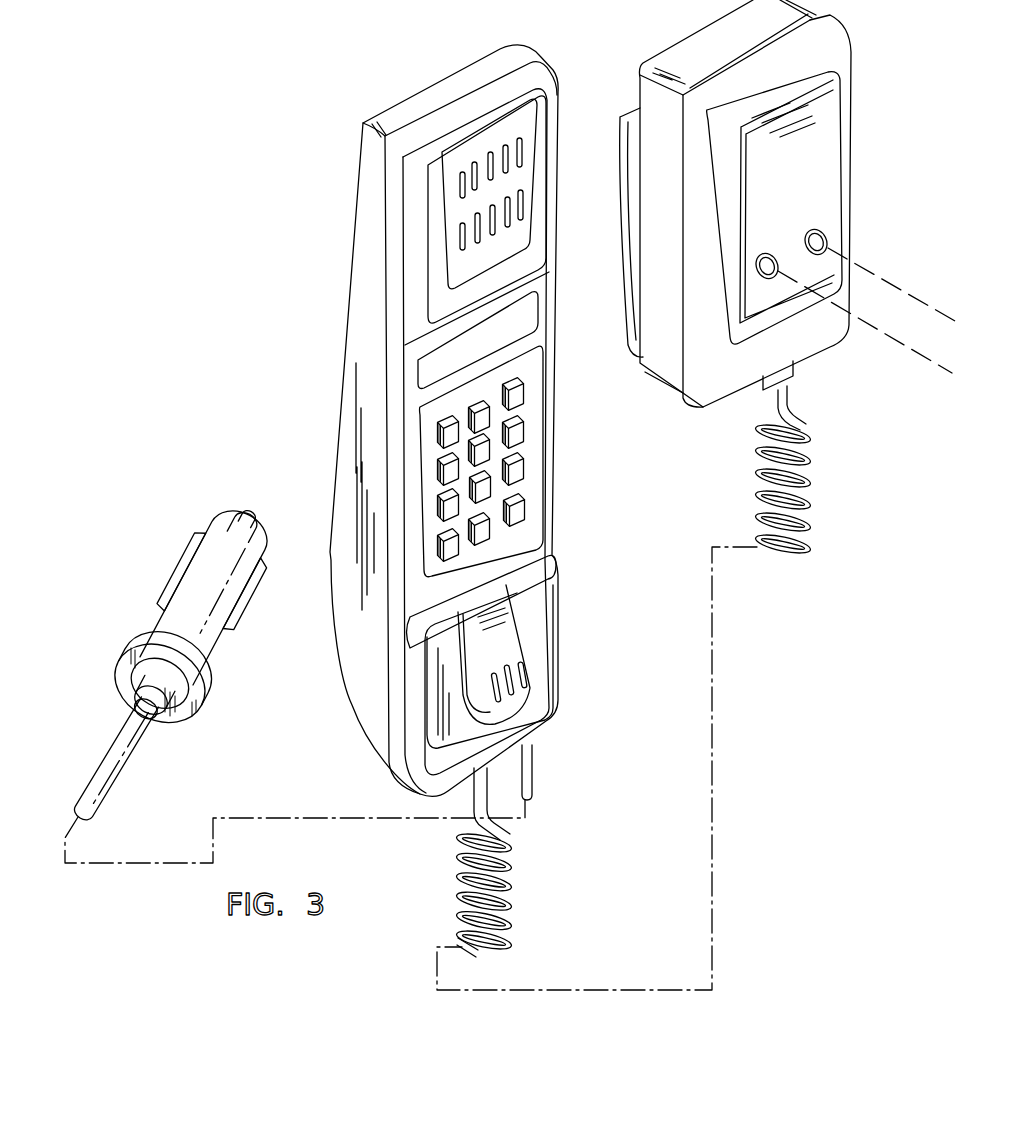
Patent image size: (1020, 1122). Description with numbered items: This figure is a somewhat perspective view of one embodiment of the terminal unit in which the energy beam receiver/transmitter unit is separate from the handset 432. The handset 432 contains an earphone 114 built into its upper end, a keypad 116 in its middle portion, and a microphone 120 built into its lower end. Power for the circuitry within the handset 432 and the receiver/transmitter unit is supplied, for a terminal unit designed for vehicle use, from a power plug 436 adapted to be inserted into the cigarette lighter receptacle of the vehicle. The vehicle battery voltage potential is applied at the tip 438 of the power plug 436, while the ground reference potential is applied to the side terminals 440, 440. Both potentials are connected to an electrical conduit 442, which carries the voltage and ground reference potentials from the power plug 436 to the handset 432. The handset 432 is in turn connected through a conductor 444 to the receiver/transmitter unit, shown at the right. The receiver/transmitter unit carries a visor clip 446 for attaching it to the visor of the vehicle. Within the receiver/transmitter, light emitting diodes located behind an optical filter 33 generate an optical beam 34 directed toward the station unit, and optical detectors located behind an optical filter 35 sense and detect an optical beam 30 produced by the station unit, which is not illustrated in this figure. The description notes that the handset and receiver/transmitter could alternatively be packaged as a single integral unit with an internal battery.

The handset 432 is at (510, 45).
The earphone 114 is at (526, 188).
The keypad 116 is at (539, 433).
The microphone 120 is at (523, 658).
The conductor 444 is at (508, 878).
The optical beam 30 is at (866, 322).
The optical filter 33 is at (821, 229).
The optical filter 35 is at (771, 253).
The optical beam 34 is at (891, 268).
The visor clip 446 is at (616, 124).
The power plug 436 is at (189, 654).
The tip 438 is at (244, 524).
The side terminals 440 is at (207, 592).
The electrical conduit 442 is at (115, 770).